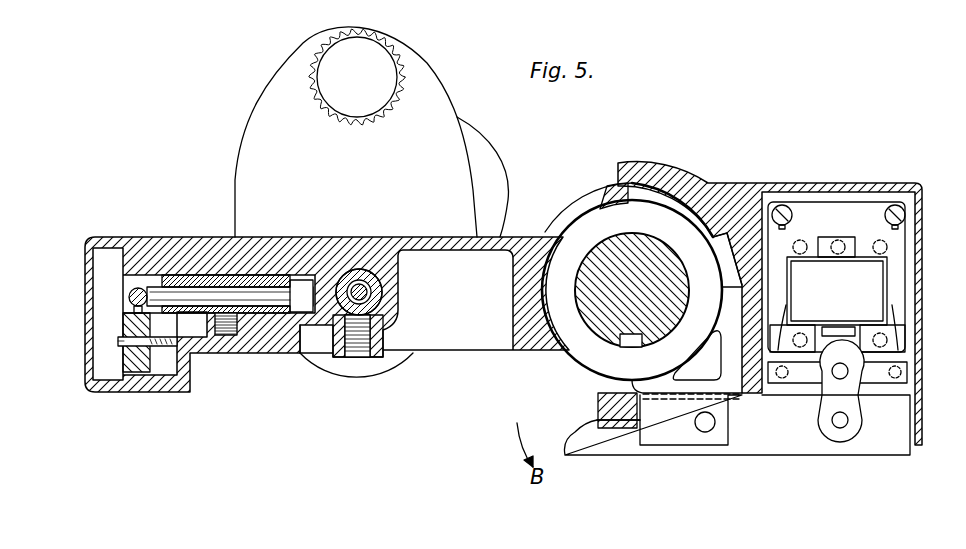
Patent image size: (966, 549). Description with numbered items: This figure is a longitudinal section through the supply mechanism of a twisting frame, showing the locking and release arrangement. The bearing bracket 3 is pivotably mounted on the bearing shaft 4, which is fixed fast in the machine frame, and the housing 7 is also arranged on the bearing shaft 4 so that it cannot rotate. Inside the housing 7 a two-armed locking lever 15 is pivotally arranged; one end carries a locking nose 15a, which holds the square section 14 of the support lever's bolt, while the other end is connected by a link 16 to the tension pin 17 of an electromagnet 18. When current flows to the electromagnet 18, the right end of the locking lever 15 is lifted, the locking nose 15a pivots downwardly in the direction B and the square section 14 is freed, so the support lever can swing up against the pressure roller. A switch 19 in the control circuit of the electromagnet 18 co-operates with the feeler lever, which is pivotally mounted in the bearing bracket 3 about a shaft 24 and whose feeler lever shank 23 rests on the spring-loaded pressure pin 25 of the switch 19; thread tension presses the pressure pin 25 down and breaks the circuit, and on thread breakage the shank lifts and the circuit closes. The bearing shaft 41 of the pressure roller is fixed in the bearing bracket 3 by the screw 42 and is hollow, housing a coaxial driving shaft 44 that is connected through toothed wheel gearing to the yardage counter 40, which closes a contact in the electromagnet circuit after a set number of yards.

The bearing bracket 3 is at (192, 262).
The bearing shaft 4 is at (615, 315).
The housing 7 is at (745, 207).
The square section 14 is at (617, 415).
The locking lever 15 is at (765, 435).
The locking nose 15a is at (588, 437).
The link 16 is at (840, 389).
The tension pin 17 is at (852, 344).
The electromagnet 18 is at (878, 281).
The switch 19 is at (144, 358).
The feeler lever shank 23 is at (139, 287).
The shaft 24 is at (204, 297).
The pressure pin 25 is at (124, 322).
The yardage counter 40 is at (264, 132).
The bearing shaft 41 is at (378, 312).
The screw 42 is at (354, 355).
The driving shaft 44 is at (332, 331).